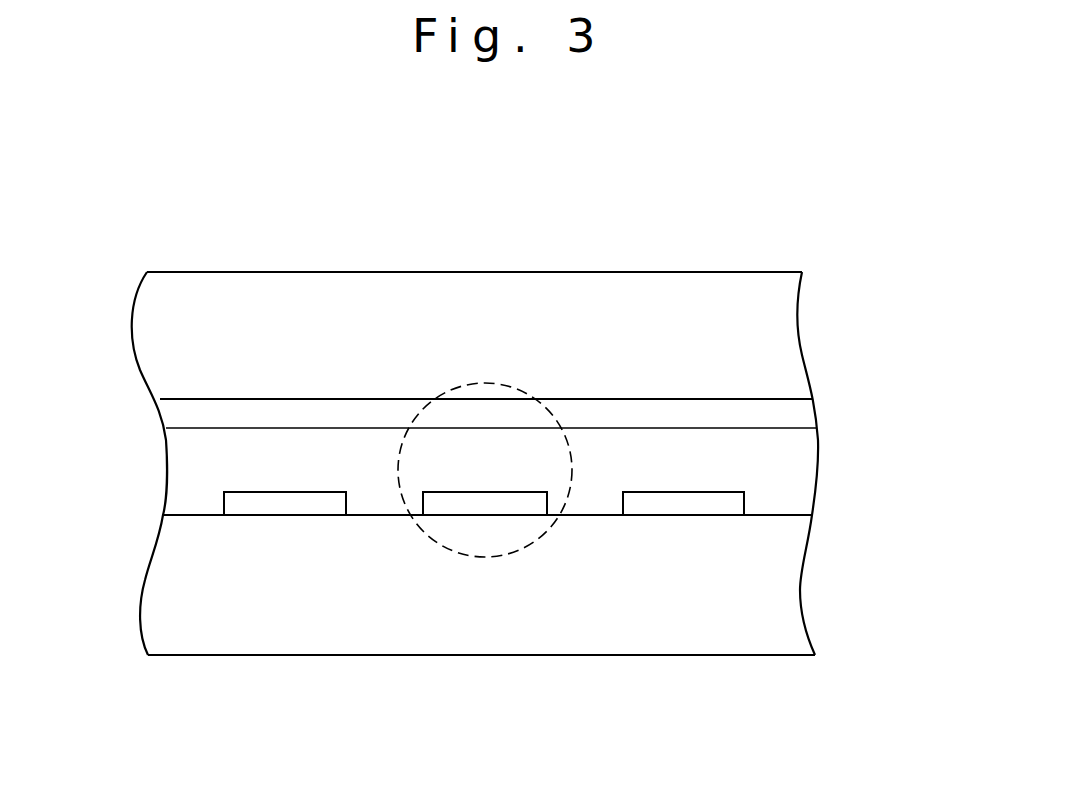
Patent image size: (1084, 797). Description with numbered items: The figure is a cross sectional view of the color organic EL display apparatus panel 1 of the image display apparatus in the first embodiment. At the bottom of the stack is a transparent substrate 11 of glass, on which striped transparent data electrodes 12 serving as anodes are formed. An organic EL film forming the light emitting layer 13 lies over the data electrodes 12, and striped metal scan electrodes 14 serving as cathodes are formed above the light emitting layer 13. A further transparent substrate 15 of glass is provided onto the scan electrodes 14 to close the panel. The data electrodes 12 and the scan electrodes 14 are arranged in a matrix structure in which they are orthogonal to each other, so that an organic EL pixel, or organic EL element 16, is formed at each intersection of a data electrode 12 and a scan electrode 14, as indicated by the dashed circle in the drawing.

The color organic EL display apparatus panel 1 is at (753, 239).
The transparent substrate 11 is at (787, 610).
The data electrodes 12 is at (697, 503).
The light emitting layer 13 is at (805, 465).
The scan electrodes 14 is at (802, 413).
The transparent substrate 15 is at (330, 297).
The organic EL element 16 is at (487, 382).